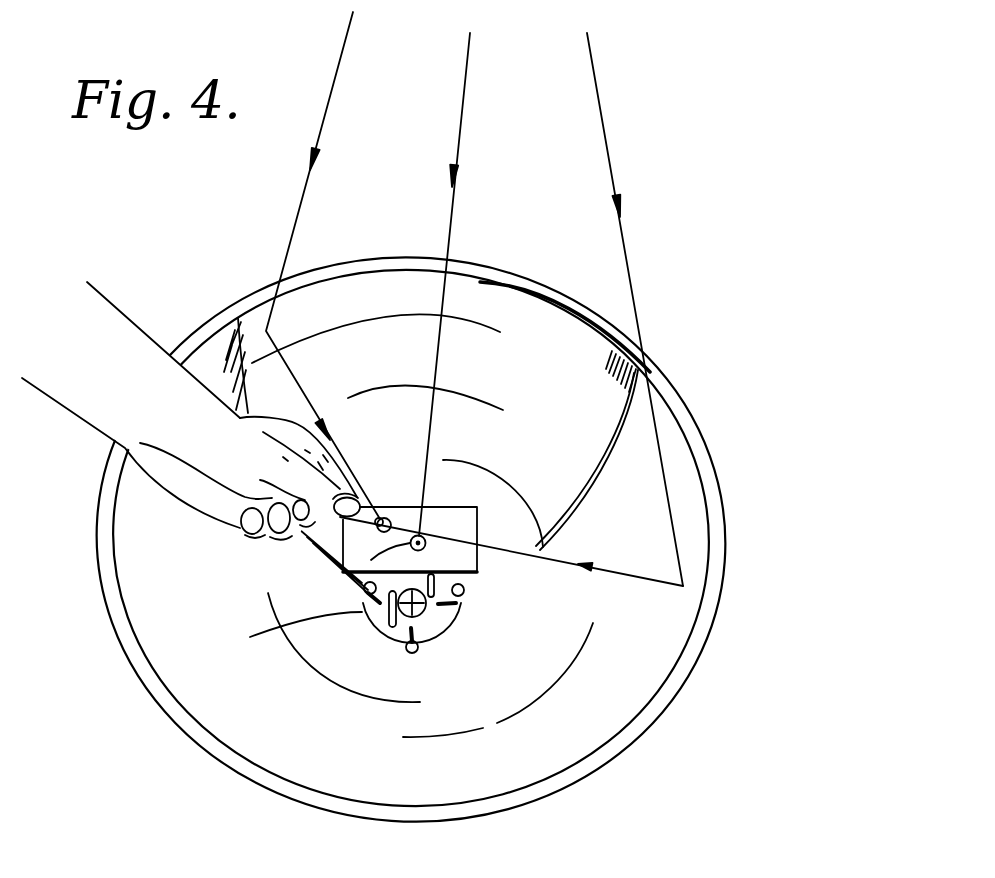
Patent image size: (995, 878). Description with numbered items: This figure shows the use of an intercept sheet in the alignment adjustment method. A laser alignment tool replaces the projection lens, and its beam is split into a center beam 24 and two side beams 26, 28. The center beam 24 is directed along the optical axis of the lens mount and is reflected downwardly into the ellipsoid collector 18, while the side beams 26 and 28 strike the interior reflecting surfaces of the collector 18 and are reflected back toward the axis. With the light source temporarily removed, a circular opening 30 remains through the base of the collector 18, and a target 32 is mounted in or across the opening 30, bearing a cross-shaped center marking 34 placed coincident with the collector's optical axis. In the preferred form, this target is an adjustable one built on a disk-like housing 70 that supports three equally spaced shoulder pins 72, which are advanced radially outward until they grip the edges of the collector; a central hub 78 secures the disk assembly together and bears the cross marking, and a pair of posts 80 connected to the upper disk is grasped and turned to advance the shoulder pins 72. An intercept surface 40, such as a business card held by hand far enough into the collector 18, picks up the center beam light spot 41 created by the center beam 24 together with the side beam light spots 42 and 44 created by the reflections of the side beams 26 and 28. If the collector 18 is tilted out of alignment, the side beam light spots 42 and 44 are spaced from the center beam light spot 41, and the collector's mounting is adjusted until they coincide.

The collector 18 is at (722, 507).
The center beam 24 is at (437, 361).
The side beam 26 is at (294, 236).
The side beam 28 is at (622, 253).
The circular opening 30 is at (380, 637).
The target 32 is at (457, 617).
The center marking 34 is at (436, 652).
The intercept surface 40 is at (458, 515).
The center beam light spot 41 is at (378, 556).
The side beam light spot 42 is at (384, 516).
The side beam light spot 44 is at (421, 535).
The disk-like housing 70 is at (268, 634).
The shoulder pins 72 is at (362, 588).
The central hub 78 is at (423, 565).
The posts 80 is at (468, 591).